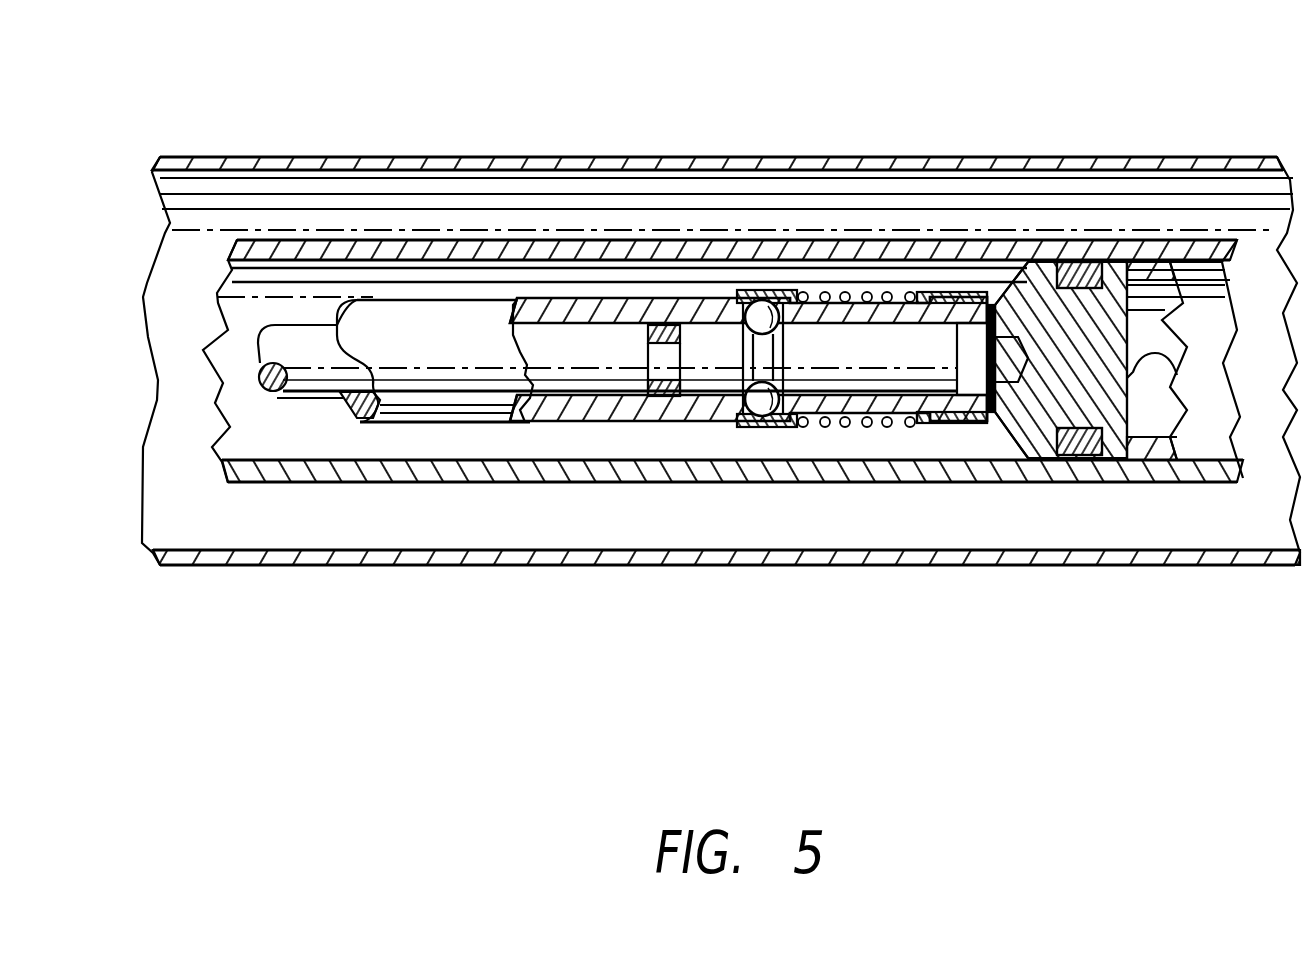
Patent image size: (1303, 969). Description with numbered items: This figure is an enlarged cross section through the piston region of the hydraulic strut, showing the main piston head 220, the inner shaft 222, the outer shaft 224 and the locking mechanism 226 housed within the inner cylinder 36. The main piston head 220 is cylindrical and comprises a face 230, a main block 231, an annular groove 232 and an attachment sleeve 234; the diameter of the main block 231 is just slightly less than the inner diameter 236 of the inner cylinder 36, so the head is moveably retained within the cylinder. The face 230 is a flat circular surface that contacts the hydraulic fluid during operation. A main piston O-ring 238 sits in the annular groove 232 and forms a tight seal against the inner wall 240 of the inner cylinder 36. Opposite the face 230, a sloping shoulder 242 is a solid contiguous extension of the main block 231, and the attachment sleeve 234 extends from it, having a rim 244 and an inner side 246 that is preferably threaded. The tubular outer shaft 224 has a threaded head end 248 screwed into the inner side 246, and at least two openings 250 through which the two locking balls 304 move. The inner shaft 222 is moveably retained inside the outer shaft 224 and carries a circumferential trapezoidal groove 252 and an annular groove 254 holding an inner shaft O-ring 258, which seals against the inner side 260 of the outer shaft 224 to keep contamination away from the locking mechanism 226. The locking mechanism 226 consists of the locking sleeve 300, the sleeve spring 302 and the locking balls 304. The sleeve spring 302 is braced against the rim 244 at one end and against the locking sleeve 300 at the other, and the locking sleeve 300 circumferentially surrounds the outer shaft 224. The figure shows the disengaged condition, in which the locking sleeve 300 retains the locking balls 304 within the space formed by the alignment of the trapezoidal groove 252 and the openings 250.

The inner cylinder 36 is at (1083, 262).
The main piston head 220 is at (1038, 418).
The inner shaft 222 is at (313, 383).
The outer shaft 224 is at (415, 393).
The locking mechanism 226 is at (840, 436).
The face 230 is at (1177, 377).
The main block 231 is at (1083, 393).
The annular groove 232 is at (1066, 577).
The main piston O-ring 238 is at (1085, 457).
The attachment sleeve 234 is at (935, 300).
The inner diameter 236 is at (945, 298).
The inner wall 240 is at (408, 252).
The sloping shoulder 242 is at (1027, 425).
The rim 244 is at (917, 427).
The inner side 246 is at (893, 417).
The threaded head end 248 is at (903, 313).
The openings 250 is at (760, 300).
The trapezoidal groove 252 is at (760, 367).
The annular groove 254 is at (561, 570).
The inner shaft O-ring 258 is at (655, 383).
The inner side 260 is at (590, 350).
The locking sleeve 300 is at (768, 290).
The sleeve spring 302 is at (840, 293).
The locking balls 304 is at (762, 416).